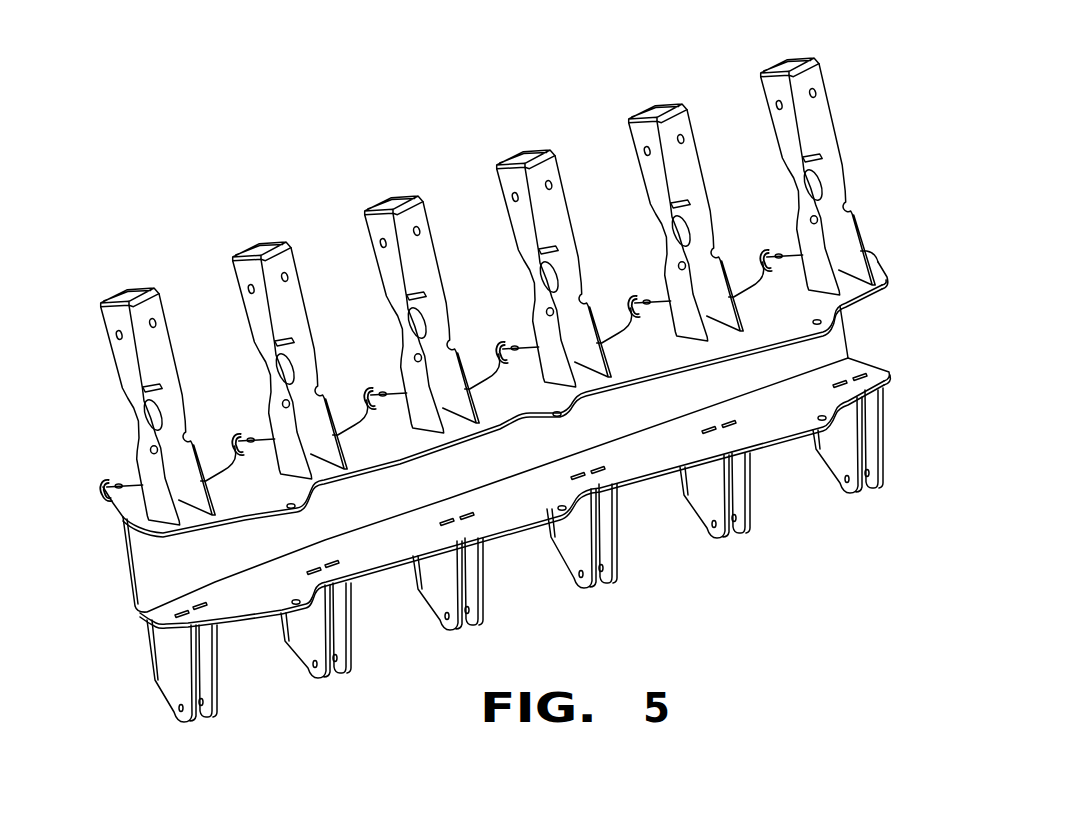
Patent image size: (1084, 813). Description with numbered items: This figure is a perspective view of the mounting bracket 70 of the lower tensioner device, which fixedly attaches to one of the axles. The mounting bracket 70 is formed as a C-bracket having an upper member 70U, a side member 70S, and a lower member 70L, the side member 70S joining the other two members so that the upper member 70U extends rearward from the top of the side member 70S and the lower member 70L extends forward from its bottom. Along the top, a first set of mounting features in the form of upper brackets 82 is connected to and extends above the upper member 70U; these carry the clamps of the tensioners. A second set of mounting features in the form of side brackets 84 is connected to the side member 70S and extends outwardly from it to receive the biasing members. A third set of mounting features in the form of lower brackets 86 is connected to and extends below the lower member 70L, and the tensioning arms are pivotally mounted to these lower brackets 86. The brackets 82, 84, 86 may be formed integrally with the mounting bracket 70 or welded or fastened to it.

The mounting bracket 70 is at (491, 133).
The upper member 70U is at (887, 280).
The lower member 70L is at (889, 390).
The side member 70S is at (130, 568).
The upper brackets 82 is at (777, 63).
The side brackets 84 is at (101, 480).
The lower brackets 86 is at (218, 697).